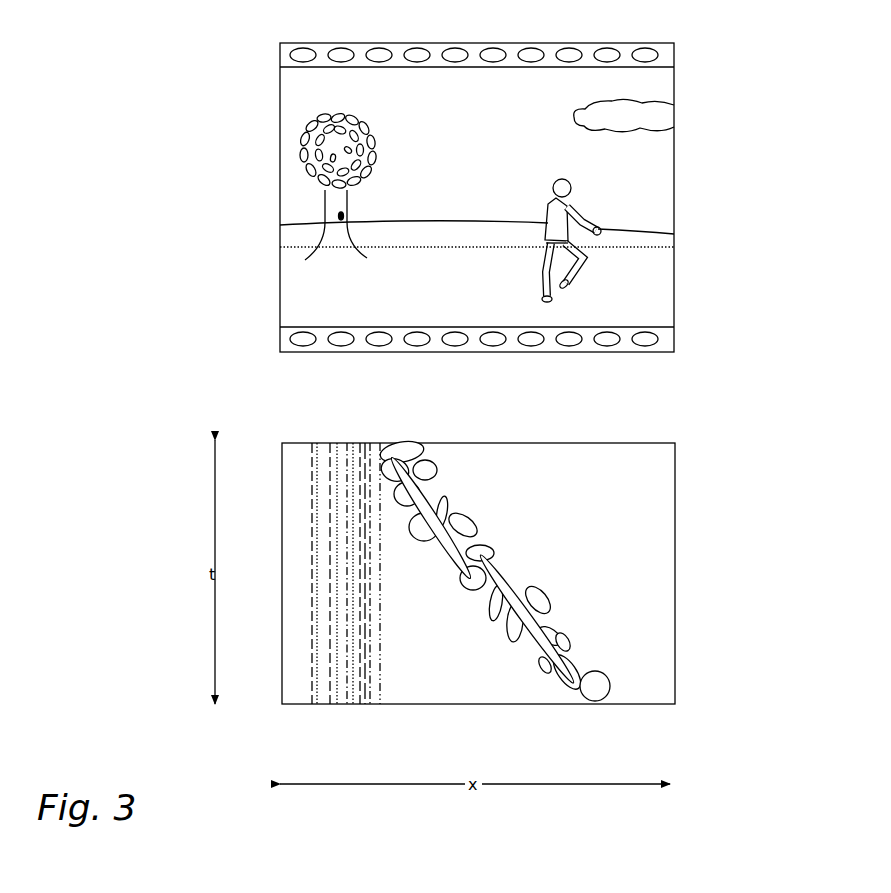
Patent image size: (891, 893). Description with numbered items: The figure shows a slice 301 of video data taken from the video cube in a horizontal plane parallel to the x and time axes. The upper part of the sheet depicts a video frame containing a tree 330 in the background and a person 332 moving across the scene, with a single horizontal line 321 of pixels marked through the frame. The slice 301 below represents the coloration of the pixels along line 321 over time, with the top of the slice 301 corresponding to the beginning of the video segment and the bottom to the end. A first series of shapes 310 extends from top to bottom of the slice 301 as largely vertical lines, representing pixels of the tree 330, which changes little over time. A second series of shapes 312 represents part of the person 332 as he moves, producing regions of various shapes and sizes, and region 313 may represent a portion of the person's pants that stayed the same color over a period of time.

The slice 301 is at (705, 528).
The first series of shapes 310 is at (332, 427).
The second series of shapes 312 is at (475, 500).
The region 313 is at (543, 648).
The line 321 is at (653, 247).
The tree 330 is at (298, 133).
The person 332 is at (598, 203).